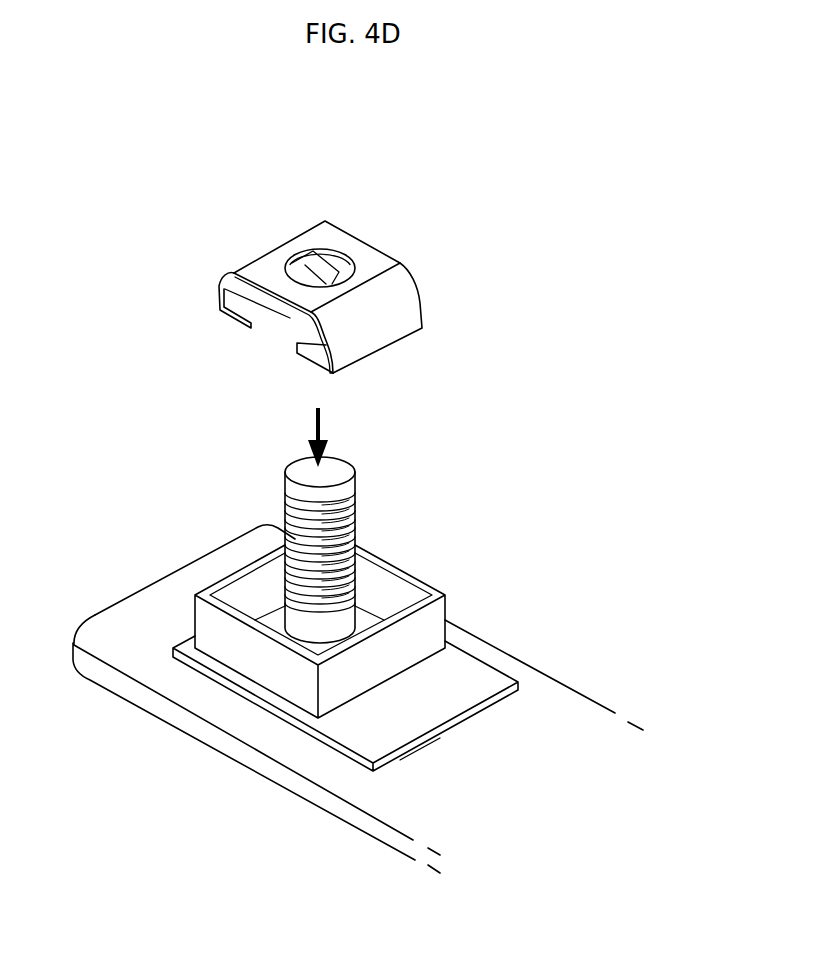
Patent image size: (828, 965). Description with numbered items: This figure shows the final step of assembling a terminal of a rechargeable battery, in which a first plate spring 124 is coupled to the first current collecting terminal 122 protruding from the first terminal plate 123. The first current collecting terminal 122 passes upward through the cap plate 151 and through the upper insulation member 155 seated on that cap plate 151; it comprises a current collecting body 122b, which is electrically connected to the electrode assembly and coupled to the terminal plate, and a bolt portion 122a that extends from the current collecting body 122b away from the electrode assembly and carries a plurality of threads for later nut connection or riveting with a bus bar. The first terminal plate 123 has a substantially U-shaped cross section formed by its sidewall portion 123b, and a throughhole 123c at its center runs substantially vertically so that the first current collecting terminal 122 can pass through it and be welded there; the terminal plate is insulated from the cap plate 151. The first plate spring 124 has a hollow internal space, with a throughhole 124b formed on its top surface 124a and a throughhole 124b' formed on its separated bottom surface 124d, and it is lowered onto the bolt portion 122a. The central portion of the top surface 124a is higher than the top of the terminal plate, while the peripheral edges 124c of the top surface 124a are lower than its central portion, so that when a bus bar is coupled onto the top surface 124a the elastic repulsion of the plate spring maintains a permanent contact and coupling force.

The first plate spring 124 is at (536, 243).
The top surface 124a is at (373, 262).
The throughhole 124b is at (405, 268).
The throughhole 124b' is at (409, 320).
The peripheral edges 124c is at (363, 302).
The separated bottom surface 124d is at (318, 355).
The first current collecting terminal 122 is at (186, 443).
The bolt portion 122a is at (285, 495).
The current collecting body 122b is at (300, 607).
The first terminal plate 123 is at (430, 571).
The sidewall portion 123b is at (430, 627).
The throughhole 123c is at (322, 653).
The cap plate 151 is at (167, 596).
The upper insulation member 155 is at (473, 687).